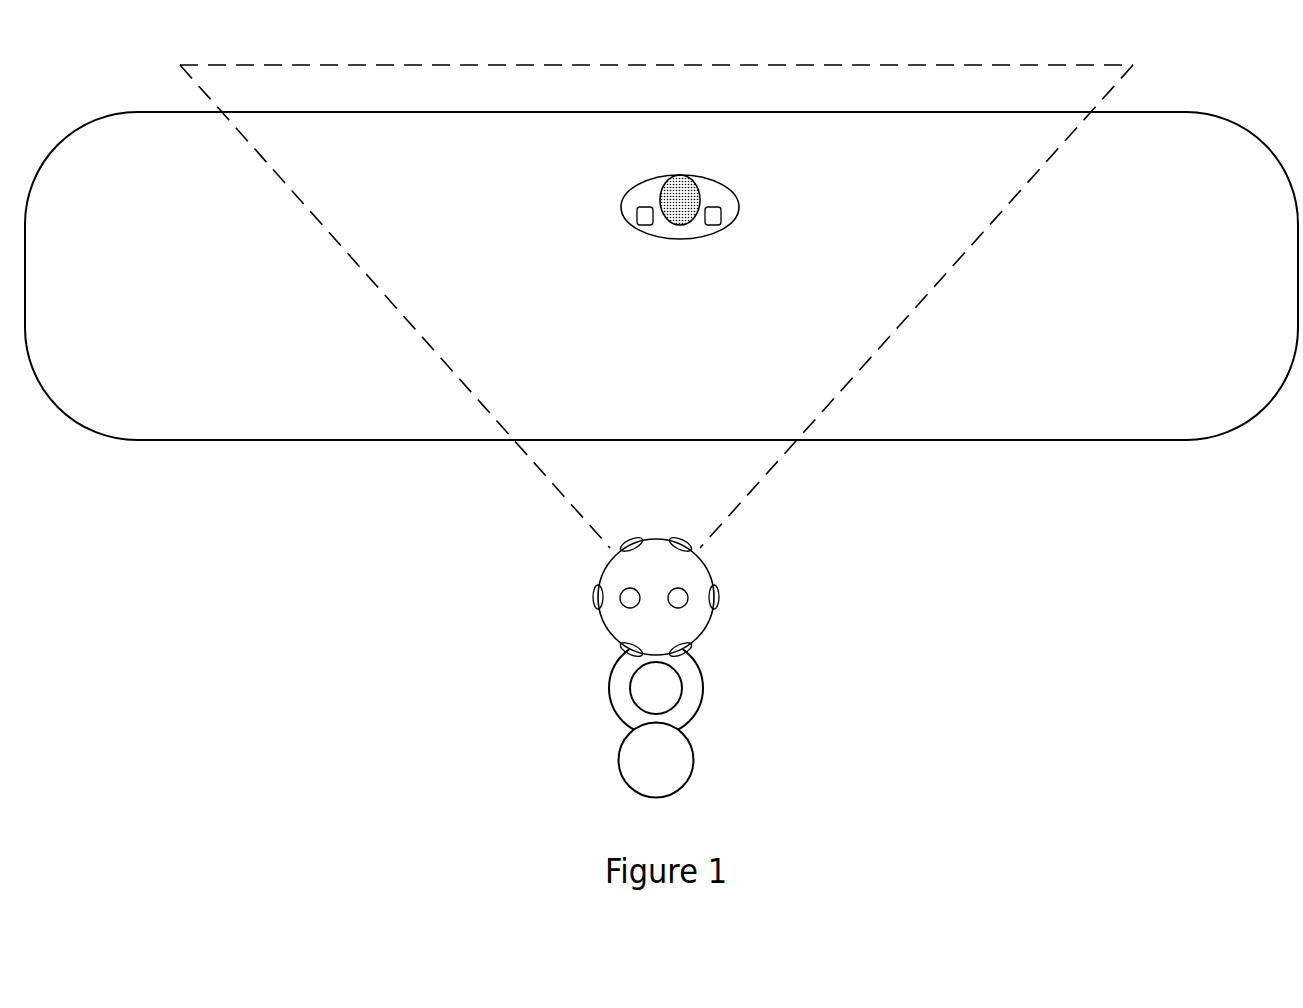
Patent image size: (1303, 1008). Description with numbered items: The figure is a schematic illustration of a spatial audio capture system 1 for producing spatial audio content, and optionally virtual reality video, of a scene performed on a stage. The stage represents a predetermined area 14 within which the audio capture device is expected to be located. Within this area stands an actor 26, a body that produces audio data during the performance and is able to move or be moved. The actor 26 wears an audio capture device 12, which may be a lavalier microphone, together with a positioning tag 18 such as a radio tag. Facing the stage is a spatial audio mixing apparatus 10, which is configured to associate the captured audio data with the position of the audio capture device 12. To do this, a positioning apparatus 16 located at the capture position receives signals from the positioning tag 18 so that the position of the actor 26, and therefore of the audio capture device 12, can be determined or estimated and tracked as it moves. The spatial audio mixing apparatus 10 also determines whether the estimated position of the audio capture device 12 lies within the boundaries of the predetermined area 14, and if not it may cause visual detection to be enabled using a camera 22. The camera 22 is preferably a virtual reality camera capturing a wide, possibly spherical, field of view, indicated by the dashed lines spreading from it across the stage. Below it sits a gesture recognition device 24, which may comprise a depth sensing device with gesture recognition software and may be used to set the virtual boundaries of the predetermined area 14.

The spatial audio capture system 1 is at (1190, 537).
The spatial audio mixing apparatus 10 is at (703, 688).
The audio capture device 12 is at (640, 227).
The predetermined area 14 is at (1003, 207).
The positioning apparatus 16 is at (656, 688).
The positioning tag 18 is at (715, 227).
The camera 22 is at (708, 625).
The gesture recognition device 24 is at (656, 760).
The actor 26 is at (730, 192).